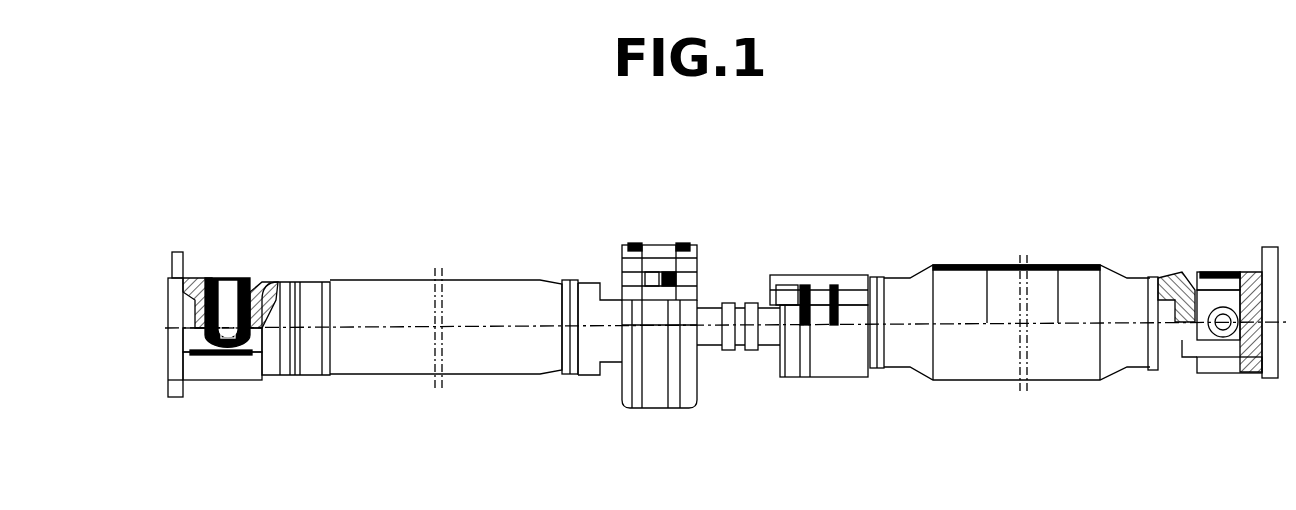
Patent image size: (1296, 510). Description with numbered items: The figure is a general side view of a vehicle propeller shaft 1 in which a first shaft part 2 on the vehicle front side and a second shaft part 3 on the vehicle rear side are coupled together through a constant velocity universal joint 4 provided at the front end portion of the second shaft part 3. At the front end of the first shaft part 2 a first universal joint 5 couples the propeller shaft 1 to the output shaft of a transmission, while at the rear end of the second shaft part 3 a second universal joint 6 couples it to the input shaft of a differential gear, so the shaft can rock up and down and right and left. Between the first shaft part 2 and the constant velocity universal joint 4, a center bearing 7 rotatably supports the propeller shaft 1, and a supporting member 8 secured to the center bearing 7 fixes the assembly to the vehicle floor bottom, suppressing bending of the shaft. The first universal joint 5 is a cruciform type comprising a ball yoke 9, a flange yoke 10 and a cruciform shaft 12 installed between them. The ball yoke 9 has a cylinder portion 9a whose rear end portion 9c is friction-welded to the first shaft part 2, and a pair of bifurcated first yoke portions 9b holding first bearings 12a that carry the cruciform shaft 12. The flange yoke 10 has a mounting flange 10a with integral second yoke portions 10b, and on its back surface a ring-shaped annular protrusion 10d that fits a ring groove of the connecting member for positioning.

The propeller shaft 1 is at (686, 200).
The first shaft part 2 is at (475, 296).
The second shaft part 3 is at (957, 290).
The constant velocity universal joint 4 is at (852, 300).
The first universal joint 5 is at (227, 320).
The second universal joint 6 is at (1210, 390).
The center bearing 7 is at (657, 406).
The supporting member 8 is at (633, 246).
The ball yoke 9 is at (303, 377).
The cylinder portion 9a is at (284, 372).
The first yoke portion 9b is at (233, 360).
The rear end portion 9c is at (302, 372).
The flange yoke 10 is at (175, 367).
The mounting flange 10a is at (172, 388).
The second yoke portion 10b is at (192, 366).
The annular protrusion 10d is at (172, 281).
The cruciform shaft 12 is at (226, 278).
The first bearing 12a is at (220, 352).